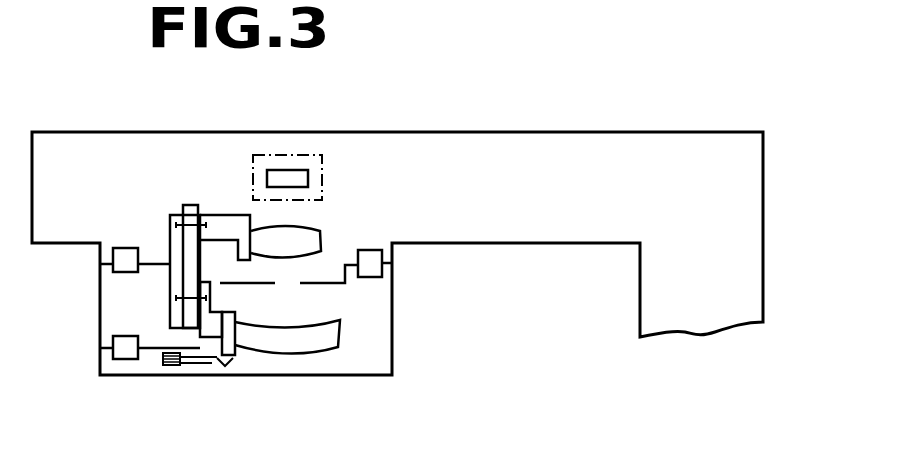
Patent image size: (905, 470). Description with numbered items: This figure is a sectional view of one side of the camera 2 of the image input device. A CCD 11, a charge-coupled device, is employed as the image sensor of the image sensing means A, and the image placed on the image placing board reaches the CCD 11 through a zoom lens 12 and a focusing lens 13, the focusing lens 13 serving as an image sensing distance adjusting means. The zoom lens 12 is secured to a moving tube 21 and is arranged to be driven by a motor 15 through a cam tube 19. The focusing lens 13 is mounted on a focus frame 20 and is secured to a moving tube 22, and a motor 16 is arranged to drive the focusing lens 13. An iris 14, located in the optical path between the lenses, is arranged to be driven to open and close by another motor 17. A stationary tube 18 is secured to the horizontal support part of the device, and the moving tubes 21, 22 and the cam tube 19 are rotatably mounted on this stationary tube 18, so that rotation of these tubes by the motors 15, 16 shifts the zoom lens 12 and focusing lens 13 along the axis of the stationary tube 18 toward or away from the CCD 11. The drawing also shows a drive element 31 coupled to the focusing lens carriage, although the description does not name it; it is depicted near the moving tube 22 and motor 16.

The camera 2 is at (549, 118).
The CCD 11 is at (297, 175).
The zoom lens 12 is at (310, 245).
The focusing lens 13 is at (318, 338).
The iris 14 is at (328, 283).
The motor 15 is at (112, 263).
The motor 16 is at (112, 348).
The motor 17 is at (382, 262).
The stationary tube 18 is at (192, 205).
The cam tube 19 is at (170, 222).
The focus frame 20 is at (236, 336).
The moving tube 21 is at (217, 228).
The moving tube 22 is at (205, 340).
The focus drive screw 31 is at (170, 366).
The image sensing means A is at (268, 155).